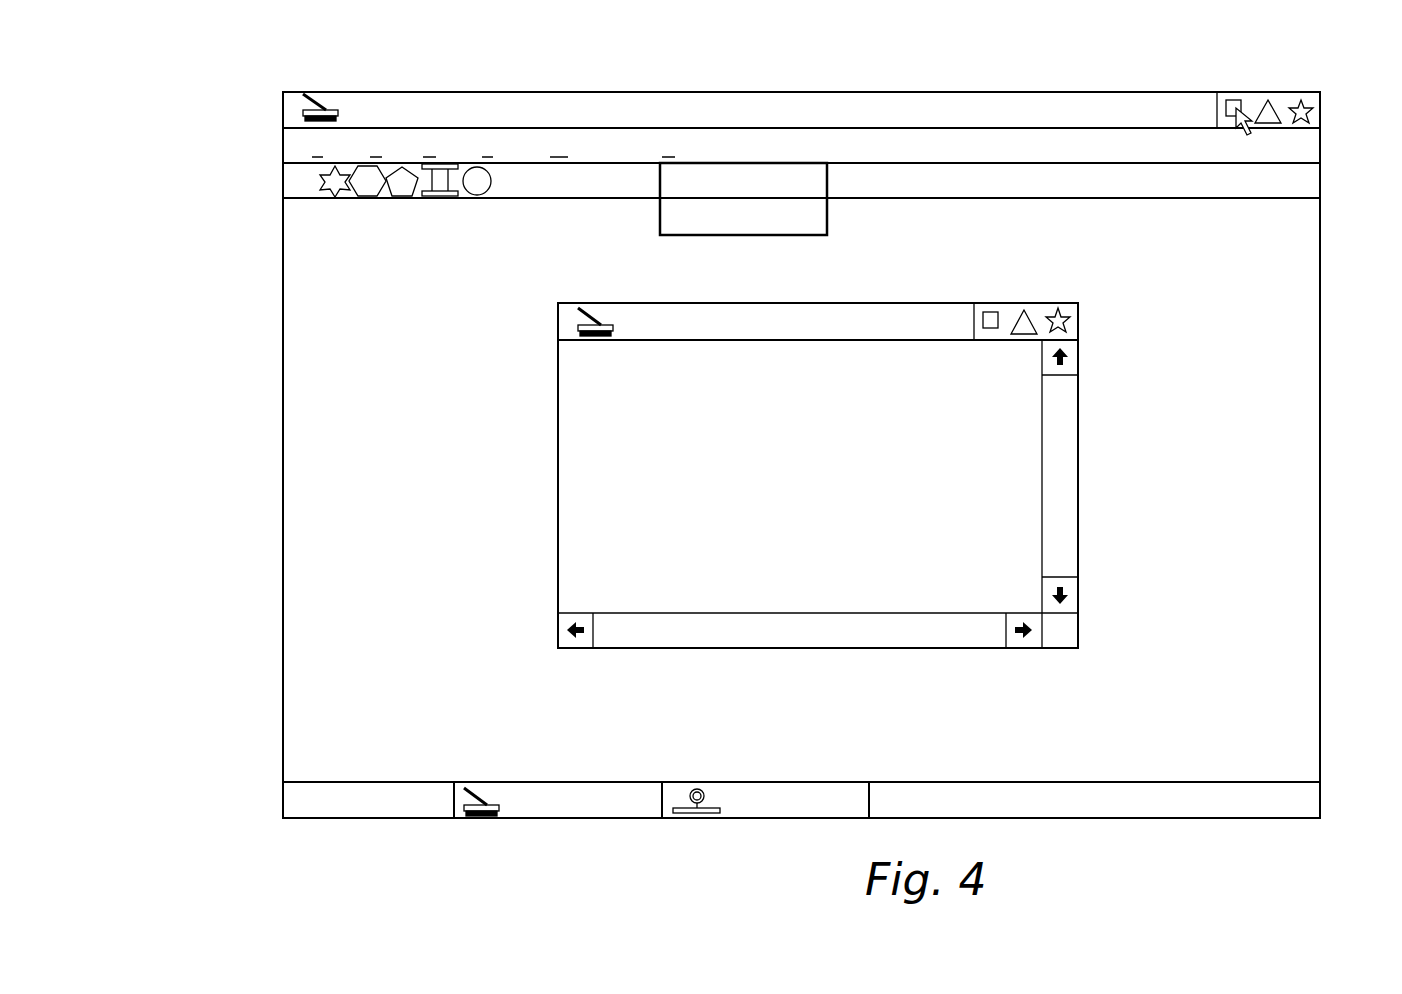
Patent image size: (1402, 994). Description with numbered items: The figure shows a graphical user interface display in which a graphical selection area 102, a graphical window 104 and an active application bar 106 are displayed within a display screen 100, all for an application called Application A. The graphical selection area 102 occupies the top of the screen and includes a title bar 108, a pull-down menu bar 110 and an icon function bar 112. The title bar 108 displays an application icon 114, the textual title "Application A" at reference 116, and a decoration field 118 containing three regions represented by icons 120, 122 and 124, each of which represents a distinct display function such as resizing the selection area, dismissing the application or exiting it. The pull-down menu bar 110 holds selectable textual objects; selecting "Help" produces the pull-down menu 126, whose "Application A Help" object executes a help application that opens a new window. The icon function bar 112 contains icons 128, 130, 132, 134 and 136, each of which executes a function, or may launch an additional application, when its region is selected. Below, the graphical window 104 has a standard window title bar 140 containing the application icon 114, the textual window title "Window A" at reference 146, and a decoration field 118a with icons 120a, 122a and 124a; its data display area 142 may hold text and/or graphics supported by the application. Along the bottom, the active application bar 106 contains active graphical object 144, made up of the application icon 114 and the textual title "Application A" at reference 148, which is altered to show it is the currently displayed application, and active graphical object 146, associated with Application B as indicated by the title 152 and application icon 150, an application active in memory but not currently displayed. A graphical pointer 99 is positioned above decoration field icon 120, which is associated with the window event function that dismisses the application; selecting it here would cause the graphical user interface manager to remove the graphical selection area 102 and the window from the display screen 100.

The graphical pointer 99 is at (1243, 132).
The display screen 100 is at (1055, 93).
The graphical selection area 102 is at (1330, 92).
The graphical window 104 is at (893, 303).
The active application bar 106 is at (272, 782).
The title bar 108 is at (272, 92).
The pull-down menu bar 110 is at (272, 128).
The icon function bar 112 is at (272, 163).
The application icon 114 is at (316, 100).
The textual title 116 is at (497, 102).
The decoration field 118 is at (1254, 92).
The decoration field icon 120 is at (1225, 110).
The decoration field icon 122 is at (1266, 122).
The decoration field icon 124 is at (1318, 92).
The pull-down menu 126 is at (828, 214).
The icon 128 is at (342, 198).
The icon 130 is at (368, 196).
The icon 132 is at (400, 197).
The icon 134 is at (452, 197).
The icon 136 is at (486, 192).
The window title bar 140 is at (549, 303).
The data display area 142 is at (830, 500).
The active graphical object 144 is at (573, 819).
The textual window title / active graphical object 146 is at (697, 315).
The textual title 148 is at (560, 790).
The application icon 150 is at (700, 789).
The textual title 152 is at (790, 796).
The decoration field 118a is at (1016, 303).
The icon 120a is at (989, 330).
The icon 122a is at (1022, 334).
The icon 124a is at (1066, 320).